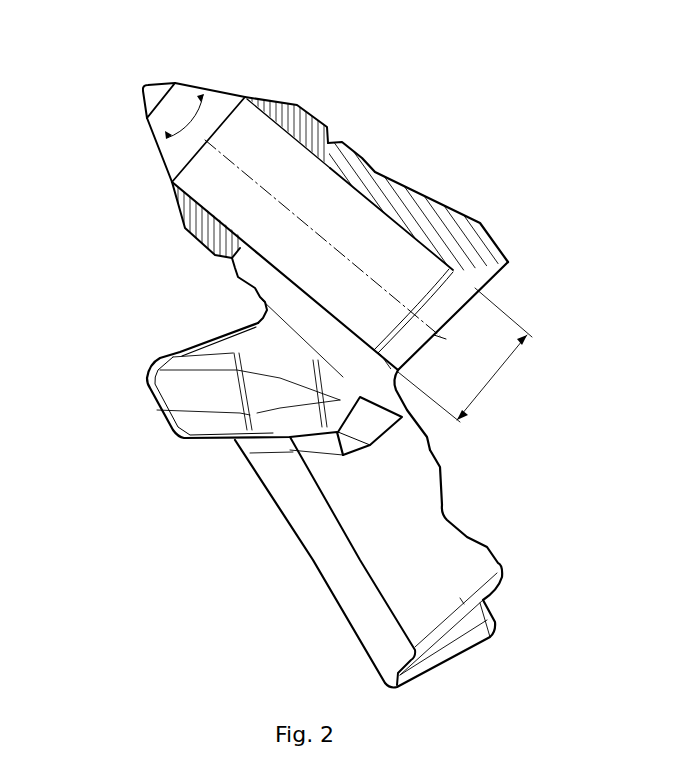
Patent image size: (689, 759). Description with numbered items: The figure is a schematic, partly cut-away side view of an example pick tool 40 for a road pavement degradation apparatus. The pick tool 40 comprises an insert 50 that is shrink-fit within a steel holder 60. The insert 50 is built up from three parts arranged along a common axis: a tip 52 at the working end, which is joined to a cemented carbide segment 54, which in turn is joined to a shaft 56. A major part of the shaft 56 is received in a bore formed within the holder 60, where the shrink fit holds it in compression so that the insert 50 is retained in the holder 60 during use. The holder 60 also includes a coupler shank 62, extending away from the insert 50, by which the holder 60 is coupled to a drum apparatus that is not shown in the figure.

The pick tool 40 is at (446, 113).
The insert 50 is at (130, 67).
The tip 52 is at (152, 78).
The cemented carbide segment 54 is at (176, 82).
The shaft 56 is at (252, 140).
The steel holder 60 is at (258, 323).
The coupler shank 62 is at (350, 570).